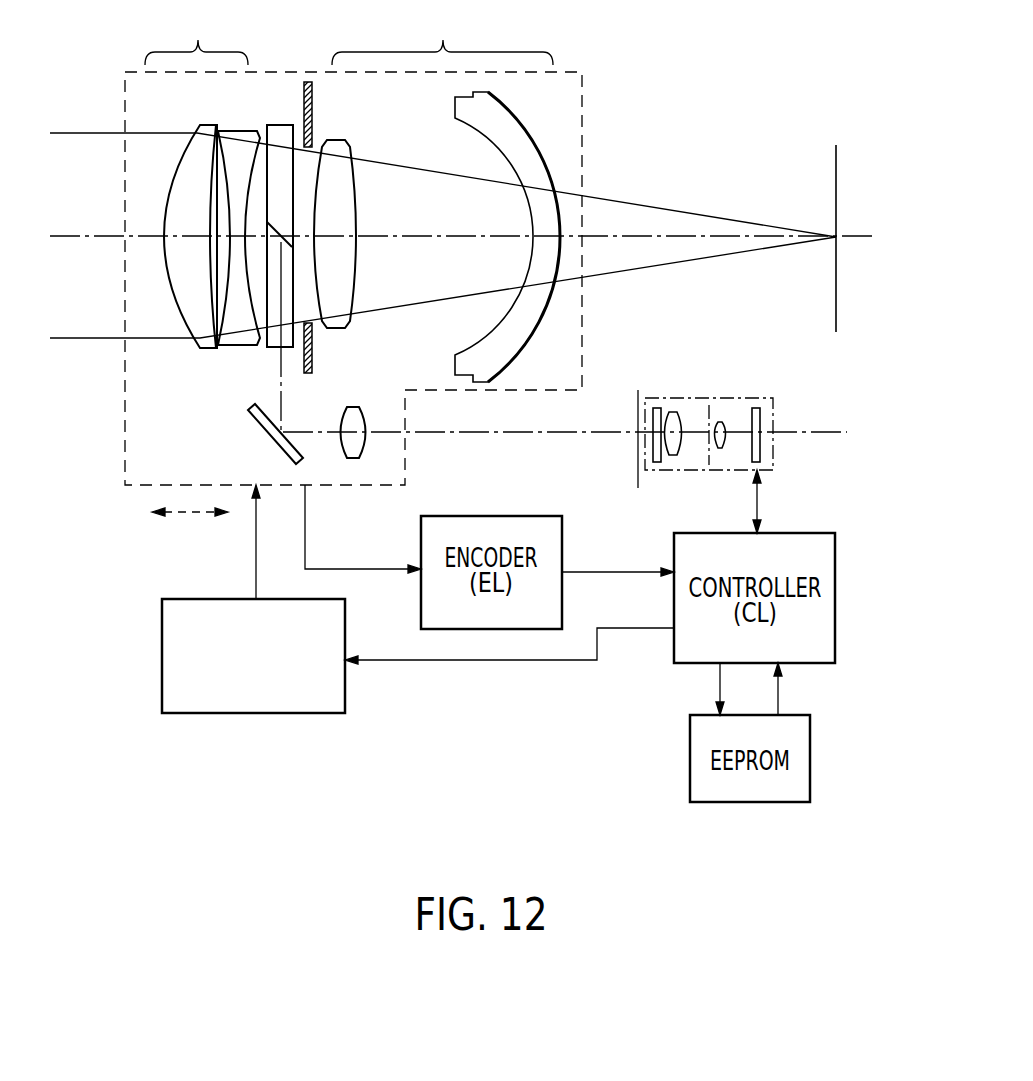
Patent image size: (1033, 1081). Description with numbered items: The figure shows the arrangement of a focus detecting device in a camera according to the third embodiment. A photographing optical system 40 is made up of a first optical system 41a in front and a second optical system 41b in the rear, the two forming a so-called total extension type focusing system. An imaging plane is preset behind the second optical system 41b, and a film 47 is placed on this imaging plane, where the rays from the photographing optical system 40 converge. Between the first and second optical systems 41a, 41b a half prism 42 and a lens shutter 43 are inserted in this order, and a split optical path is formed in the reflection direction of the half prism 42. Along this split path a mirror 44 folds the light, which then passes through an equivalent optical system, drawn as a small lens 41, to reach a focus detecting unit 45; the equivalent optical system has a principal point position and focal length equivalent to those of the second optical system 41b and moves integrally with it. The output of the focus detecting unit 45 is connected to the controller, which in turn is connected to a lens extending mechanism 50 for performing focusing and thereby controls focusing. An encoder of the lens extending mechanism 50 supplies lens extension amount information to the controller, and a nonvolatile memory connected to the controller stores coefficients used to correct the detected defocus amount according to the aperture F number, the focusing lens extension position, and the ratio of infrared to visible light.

The photographing optical system 40 is at (592, 110).
The first optical system 41a is at (202, 180).
The second optical system 41b is at (437, 197).
The condenser lens 41 is at (358, 407).
The half prism 42 is at (268, 125).
The lens shutter 43 is at (308, 82).
The mirror 44 is at (247, 412).
The focus detecting unit 45 is at (762, 398).
The film 47 is at (836, 165).
The lens extending mechanism 50 is at (162, 645).